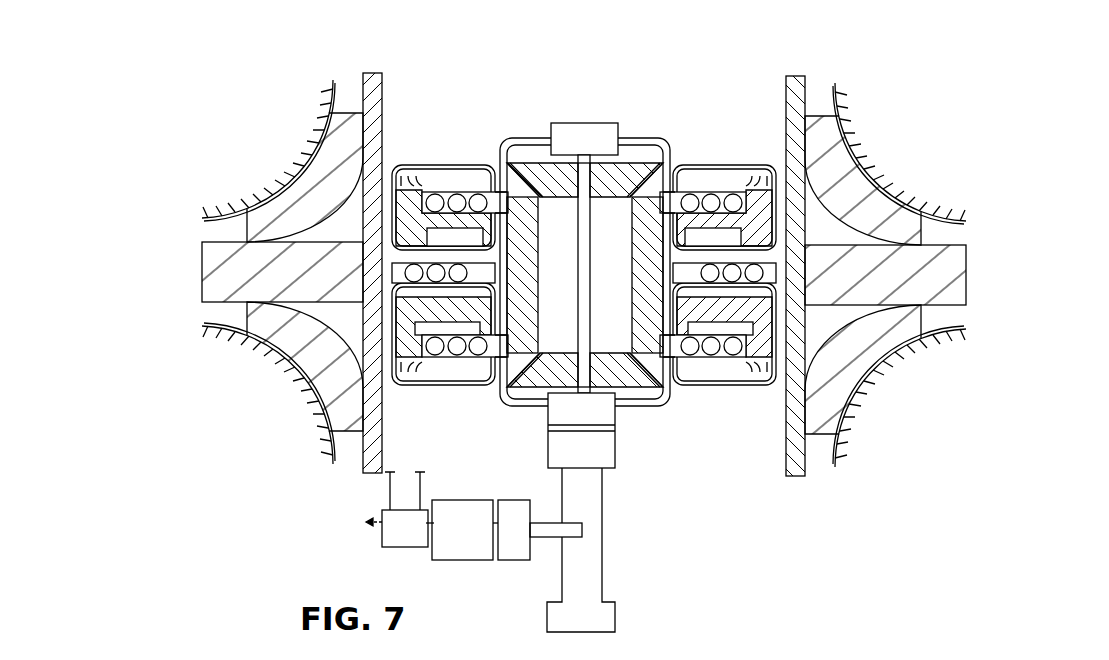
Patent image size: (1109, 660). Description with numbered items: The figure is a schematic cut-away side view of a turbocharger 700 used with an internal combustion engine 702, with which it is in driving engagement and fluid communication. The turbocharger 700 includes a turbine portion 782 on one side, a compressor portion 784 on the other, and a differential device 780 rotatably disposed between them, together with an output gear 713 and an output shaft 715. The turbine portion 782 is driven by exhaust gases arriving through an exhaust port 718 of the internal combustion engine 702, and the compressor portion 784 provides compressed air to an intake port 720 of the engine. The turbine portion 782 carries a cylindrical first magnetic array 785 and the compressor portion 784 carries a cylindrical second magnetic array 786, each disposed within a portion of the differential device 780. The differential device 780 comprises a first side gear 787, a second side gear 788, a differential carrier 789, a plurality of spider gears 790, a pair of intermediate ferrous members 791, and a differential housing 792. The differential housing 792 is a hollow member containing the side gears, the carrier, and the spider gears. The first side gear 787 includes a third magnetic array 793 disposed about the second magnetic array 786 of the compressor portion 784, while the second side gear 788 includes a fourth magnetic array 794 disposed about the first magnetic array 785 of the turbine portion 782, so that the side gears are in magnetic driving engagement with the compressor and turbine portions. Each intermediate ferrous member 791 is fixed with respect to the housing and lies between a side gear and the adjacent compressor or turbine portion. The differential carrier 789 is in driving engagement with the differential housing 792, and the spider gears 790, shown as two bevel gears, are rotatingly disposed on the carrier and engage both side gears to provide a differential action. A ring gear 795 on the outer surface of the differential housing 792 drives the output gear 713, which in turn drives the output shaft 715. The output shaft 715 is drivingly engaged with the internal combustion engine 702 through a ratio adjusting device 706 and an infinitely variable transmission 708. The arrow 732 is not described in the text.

The turbocharger 700 is at (724, 82).
The differential device 780 is at (490, 86).
The compressor portion 784 is at (201, 262).
The turbine portion 782 is at (967, 262).
The intermediate ferrous members 791 is at (426, 168).
The third magnetic array 793 is at (478, 192).
The fourth magnetic array 794 is at (733, 195).
The second magnetic array 786 is at (458, 284).
The first magnetic array 785 is at (753, 286).
The differential housing 792 is at (518, 140).
The first side gear 787 is at (551, 212).
The differential carrier 789 is at (597, 212).
The second side gear 788 is at (636, 262).
The ring gear 795 is at (582, 122).
The spider gears 790 is at (636, 160).
The output gear 713 is at (603, 500).
The output shaft 715 is at (548, 522).
The ratio adjusting device 706 is at (515, 561).
The infinitely variable transmission 708 is at (460, 561).
The intake port 720 is at (431, 506).
The internal combustion engine 702 is at (396, 549).
The exhaust port 718 is at (390, 508).
The flow direction arrow 732 is at (372, 527).